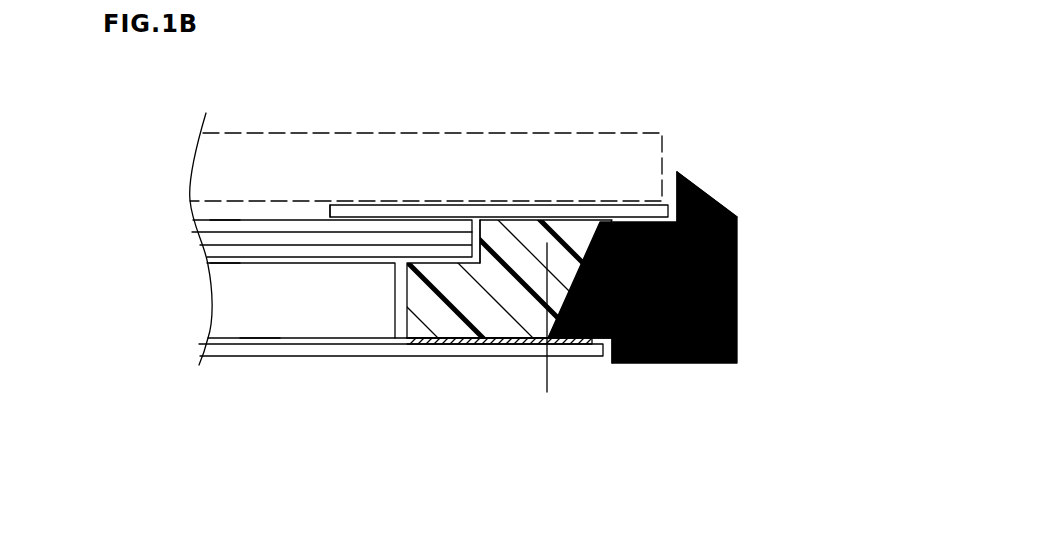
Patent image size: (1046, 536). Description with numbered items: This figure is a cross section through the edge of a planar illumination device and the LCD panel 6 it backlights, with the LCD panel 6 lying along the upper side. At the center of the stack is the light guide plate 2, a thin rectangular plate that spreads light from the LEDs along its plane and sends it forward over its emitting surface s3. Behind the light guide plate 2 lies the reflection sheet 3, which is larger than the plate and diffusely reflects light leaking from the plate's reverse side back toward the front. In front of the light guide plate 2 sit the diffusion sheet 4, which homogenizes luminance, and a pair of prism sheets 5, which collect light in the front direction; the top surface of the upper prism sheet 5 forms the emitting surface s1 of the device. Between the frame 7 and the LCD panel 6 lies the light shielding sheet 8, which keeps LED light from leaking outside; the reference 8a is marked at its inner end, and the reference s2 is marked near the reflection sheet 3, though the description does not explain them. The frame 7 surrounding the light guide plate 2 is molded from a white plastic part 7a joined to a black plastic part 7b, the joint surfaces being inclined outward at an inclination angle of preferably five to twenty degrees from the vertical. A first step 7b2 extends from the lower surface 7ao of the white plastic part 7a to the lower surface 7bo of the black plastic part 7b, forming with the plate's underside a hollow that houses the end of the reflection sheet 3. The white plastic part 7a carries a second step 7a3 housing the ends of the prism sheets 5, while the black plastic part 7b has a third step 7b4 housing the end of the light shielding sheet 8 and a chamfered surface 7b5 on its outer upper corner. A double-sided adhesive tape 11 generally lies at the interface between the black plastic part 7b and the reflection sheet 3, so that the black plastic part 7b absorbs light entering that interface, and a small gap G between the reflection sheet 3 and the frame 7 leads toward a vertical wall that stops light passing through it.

The light guide plate 2 is at (233, 295).
The reflection sheet 3 is at (332, 357).
The diffusion sheet 4 is at (247, 252).
The prism sheets 5 is at (310, 240).
The LCD panel 6 is at (398, 152).
The frame 7 is at (770, 210).
The white plastic part 7a is at (452, 327).
The second step 7a3 is at (478, 240).
The lower surface of the white plastic part 7ao is at (507, 344).
The black plastic part 7b is at (737, 279).
The first step 7b2 is at (612, 349).
The third step 7b4 is at (675, 193).
The chamfered surface 7b5 is at (703, 188).
The lower surface of the black plastic part 7bo is at (577, 344).
The light shielding sheet 8 is at (550, 213).
The end of adhesive layer 8a is at (330, 208).
The double-sided adhesive tape 11 is at (433, 345).
The gap G is at (403, 342).
The emitting surface of the planar illumination device s1 is at (222, 226).
The second spacing s2 is at (272, 340).
The emitting surface of the light guide plate s3 is at (230, 263).